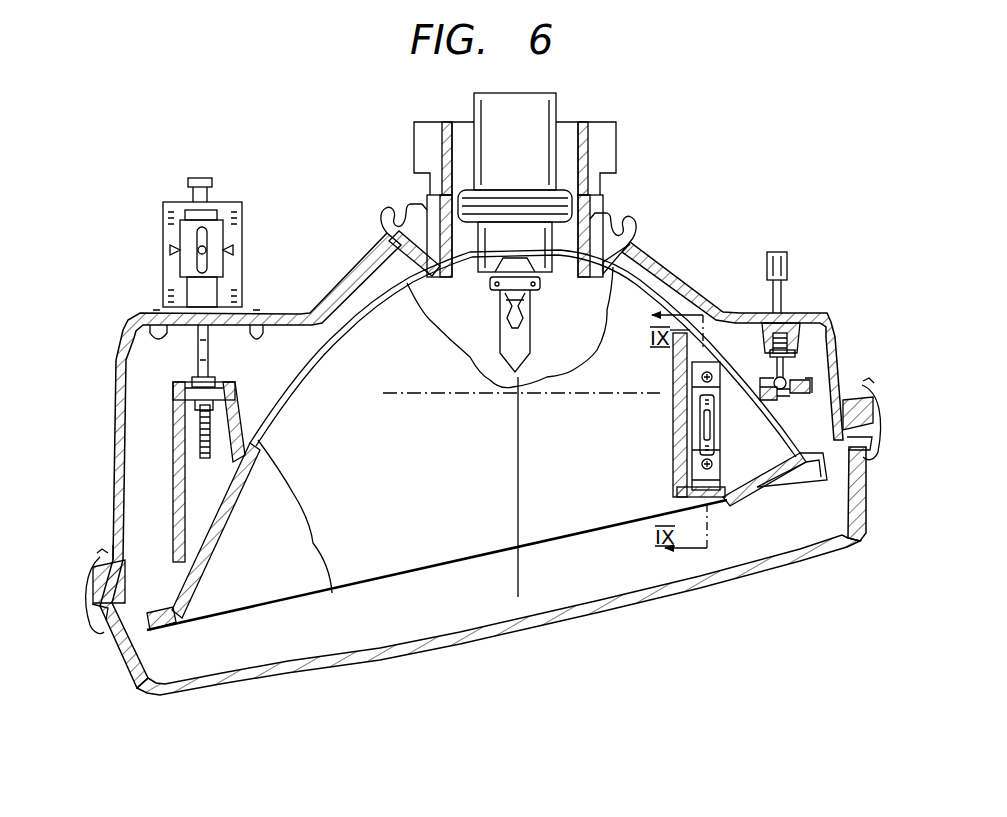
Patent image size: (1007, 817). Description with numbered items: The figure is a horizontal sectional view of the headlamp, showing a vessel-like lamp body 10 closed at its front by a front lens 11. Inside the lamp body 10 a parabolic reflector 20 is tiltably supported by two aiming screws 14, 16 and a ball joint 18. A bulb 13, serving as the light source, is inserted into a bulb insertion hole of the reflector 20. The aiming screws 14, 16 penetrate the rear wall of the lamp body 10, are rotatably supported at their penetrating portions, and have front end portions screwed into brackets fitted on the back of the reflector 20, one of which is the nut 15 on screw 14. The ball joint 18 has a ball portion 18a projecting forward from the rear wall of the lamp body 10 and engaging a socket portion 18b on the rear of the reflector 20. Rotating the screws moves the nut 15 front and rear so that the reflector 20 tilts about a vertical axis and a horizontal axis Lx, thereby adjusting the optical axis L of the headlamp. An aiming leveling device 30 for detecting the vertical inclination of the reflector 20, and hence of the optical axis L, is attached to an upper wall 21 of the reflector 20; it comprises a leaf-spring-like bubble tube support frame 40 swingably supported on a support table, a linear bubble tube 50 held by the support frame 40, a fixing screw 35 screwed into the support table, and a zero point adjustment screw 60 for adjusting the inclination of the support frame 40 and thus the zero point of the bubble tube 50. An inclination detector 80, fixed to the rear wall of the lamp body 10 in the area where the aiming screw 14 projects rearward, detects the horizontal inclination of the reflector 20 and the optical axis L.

The lamp body 10 is at (666, 284).
The front lens 11 is at (560, 620).
The bulb 13 is at (540, 332).
The aiming screw 14 is at (178, 355).
The nut 15 is at (188, 402).
The aiming screw 16 is at (790, 298).
The ball joint 18 is at (797, 366).
The ball portion 18a is at (787, 386).
The socket portion 18b is at (765, 400).
The reflector 20 is at (700, 296).
The upper wall of the reflector 21 is at (410, 560).
The aiming leveling device 30 is at (805, 470).
The fixing screw 35 is at (716, 435).
The bubble tube support frame 40 is at (680, 450).
The bubble tube 50 is at (735, 437).
The zero point adjustment screw 60 is at (708, 372).
The inclination detector 80 is at (162, 250).
The optical axis L is at (520, 563).
The horizontal axis Lx is at (477, 393).